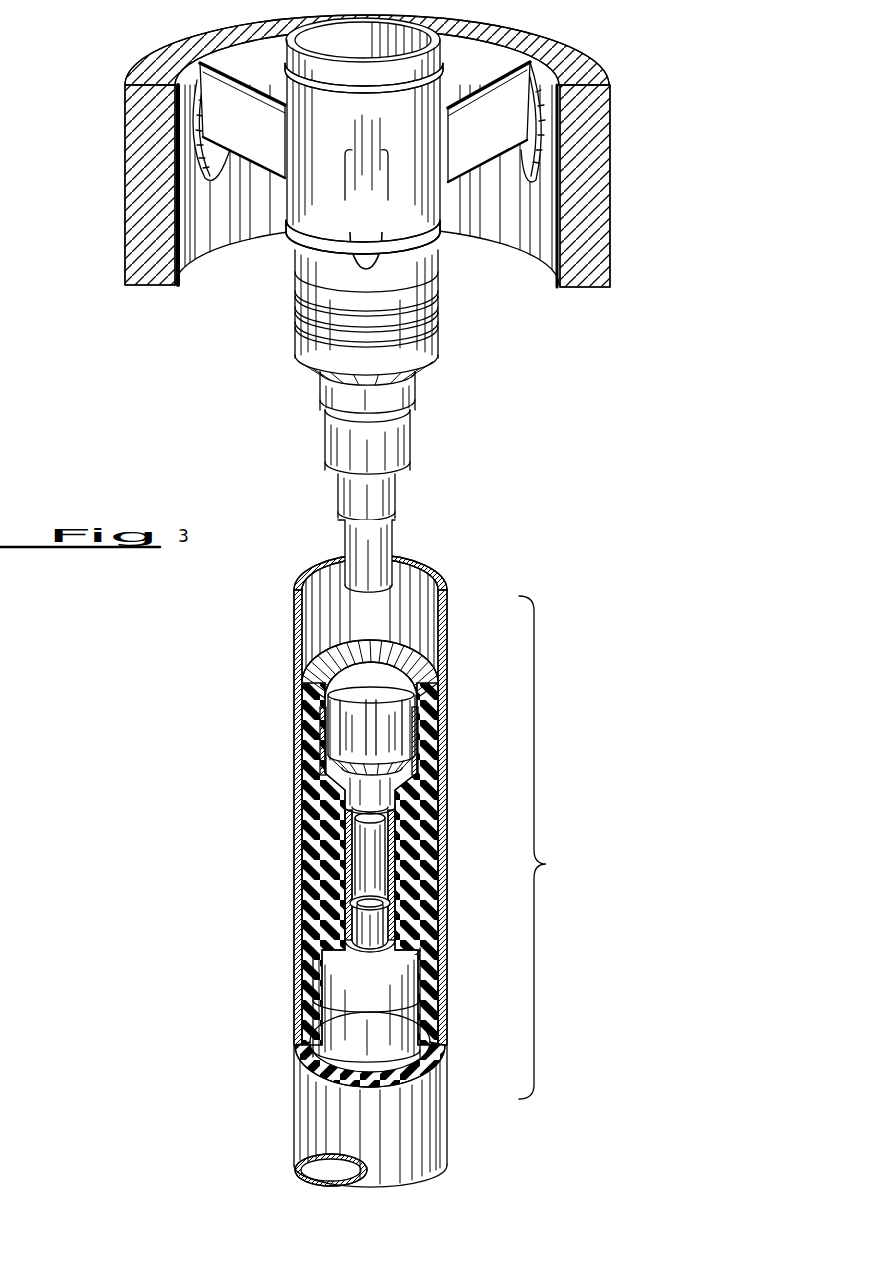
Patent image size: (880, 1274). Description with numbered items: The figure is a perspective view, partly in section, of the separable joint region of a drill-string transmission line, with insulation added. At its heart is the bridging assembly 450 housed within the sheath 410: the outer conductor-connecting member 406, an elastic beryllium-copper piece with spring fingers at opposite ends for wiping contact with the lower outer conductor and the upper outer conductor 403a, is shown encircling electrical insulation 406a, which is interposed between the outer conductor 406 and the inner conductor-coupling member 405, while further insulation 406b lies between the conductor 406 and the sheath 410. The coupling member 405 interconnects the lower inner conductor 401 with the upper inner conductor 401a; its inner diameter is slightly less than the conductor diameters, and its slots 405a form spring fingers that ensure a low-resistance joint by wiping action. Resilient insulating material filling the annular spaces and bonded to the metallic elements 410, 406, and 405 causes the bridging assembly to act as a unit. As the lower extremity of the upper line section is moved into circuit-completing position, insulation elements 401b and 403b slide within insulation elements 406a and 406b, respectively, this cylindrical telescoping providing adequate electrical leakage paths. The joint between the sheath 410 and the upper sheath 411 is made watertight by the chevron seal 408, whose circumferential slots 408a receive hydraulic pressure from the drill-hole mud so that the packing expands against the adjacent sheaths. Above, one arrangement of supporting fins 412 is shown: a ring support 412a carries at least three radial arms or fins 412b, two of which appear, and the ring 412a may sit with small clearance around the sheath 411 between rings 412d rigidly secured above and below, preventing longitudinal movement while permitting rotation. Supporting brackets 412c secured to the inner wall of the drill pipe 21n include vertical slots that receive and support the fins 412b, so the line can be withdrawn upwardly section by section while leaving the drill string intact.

The housing / ring wall 21n is at (598, 244).
The fin assembly 412 is at (490, 198).
The ring support 412a is at (296, 233).
The arms or fins 412b is at (205, 68).
The supporting brackets 412c is at (203, 160).
The rings 412d is at (442, 68).
The sheath 411 is at (300, 262).
The chevron seal 408 is at (437, 330).
The circumferential slots 408a is at (302, 336).
The insulation element 403b is at (327, 384).
The upper outer conductor 403a is at (412, 433).
The insulation element 401b is at (396, 489).
The upper inner conductor 401a is at (358, 532).
The sheath 410 is at (444, 623).
The outer conductor-connecting member 406 is at (432, 738).
The electrical insulation 406a is at (327, 892).
The insulation 406b is at (430, 768).
The conductor-coupling member 405 is at (437, 839).
The slots 405a is at (387, 850).
The inner conductor 401 is at (410, 928).
The lower assembly 450 is at (598, 876).